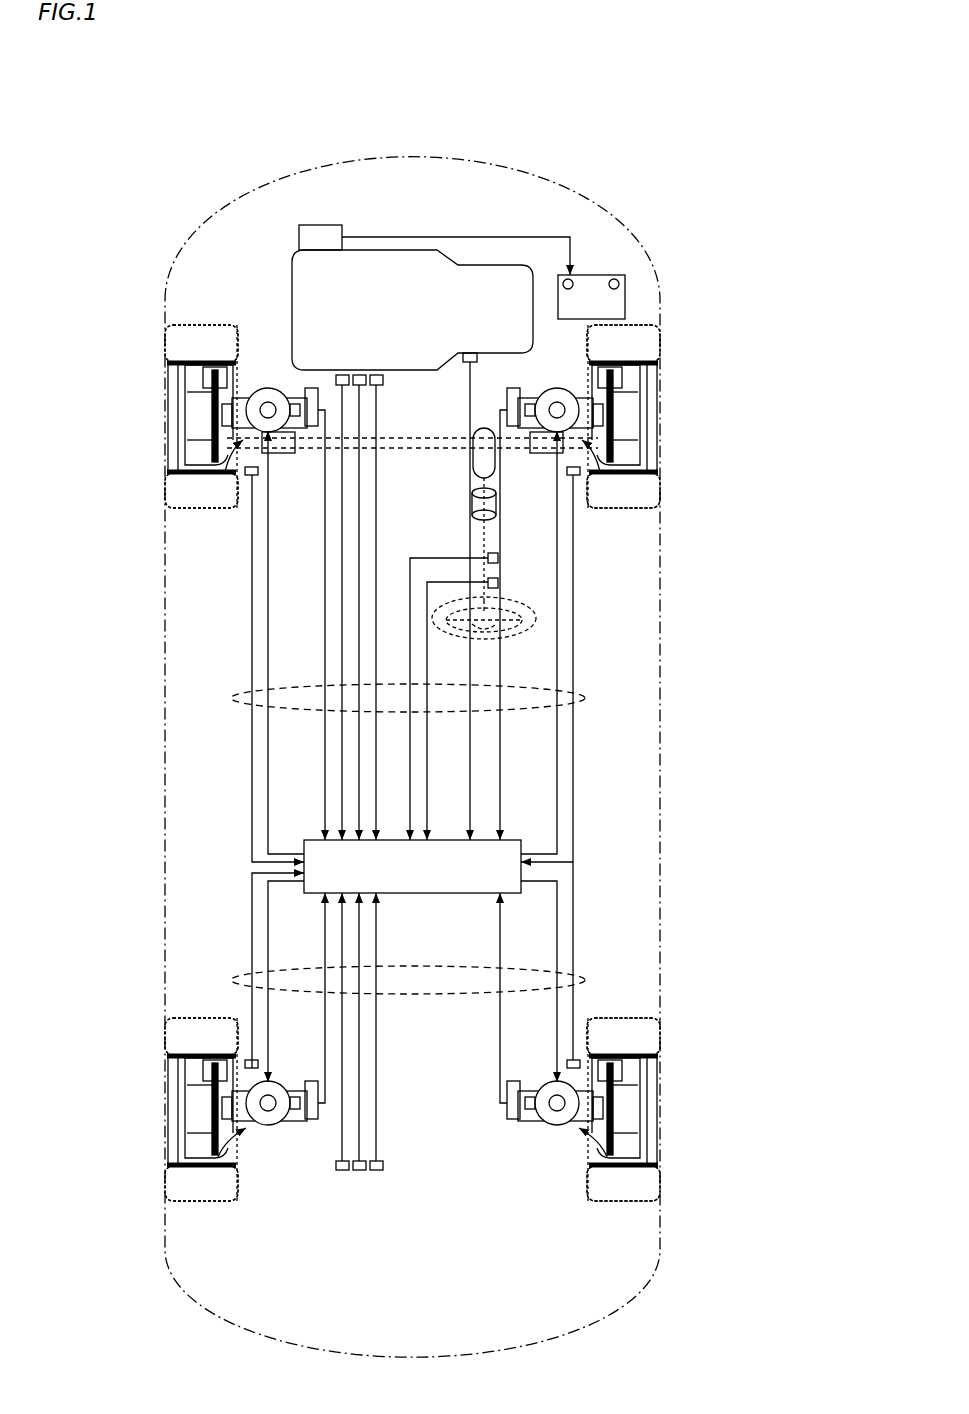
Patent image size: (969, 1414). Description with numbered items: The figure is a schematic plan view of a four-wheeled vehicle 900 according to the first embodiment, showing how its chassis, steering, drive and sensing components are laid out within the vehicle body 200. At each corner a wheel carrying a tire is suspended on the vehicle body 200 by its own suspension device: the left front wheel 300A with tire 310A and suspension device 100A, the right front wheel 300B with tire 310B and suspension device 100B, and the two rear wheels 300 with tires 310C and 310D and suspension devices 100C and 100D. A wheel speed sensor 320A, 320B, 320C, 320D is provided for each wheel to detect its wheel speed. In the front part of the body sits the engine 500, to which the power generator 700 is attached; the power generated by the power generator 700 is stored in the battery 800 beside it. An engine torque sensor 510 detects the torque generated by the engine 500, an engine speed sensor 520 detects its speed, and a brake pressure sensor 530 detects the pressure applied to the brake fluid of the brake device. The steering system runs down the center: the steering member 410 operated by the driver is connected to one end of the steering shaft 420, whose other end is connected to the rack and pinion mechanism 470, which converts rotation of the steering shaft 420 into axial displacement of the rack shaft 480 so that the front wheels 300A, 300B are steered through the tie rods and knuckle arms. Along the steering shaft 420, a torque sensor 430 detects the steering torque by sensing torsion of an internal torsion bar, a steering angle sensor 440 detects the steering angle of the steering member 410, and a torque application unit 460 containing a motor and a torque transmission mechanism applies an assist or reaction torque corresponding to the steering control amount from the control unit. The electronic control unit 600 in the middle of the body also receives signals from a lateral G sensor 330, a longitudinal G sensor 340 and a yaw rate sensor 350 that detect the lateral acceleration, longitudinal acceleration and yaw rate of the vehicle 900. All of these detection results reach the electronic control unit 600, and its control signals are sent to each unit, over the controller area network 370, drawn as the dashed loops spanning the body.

The vehicle 900 is at (630, 110).
The vehicle body 200 is at (643, 247).
The power generator 700 is at (330, 225).
The engine 500 is at (292, 302).
The engine torque sensor 510 is at (348, 375).
The engine speed sensor 520 is at (365, 375).
The brake pressure sensor 530 is at (380, 375).
The battery 800 is at (620, 300).
The wheel 300A is at (165, 372).
The wheel 300B is at (660, 375).
The wheel 300 is at (165, 1065).
The suspension device 100A is at (165, 465).
The suspension device 100B is at (660, 465).
The suspension device 100C is at (165, 1157).
The suspension device 100D is at (660, 1157).
The tire 310A is at (178, 498).
The tire 310B is at (648, 498).
The tire 310C is at (178, 1190).
The tire 310D is at (648, 1190).
The wheel speed sensor 320A is at (232, 478).
The wheel speed sensor 320B is at (592, 478).
The wheel speed sensor 320C is at (243, 1062).
The wheel speed sensor 320D is at (582, 1062).
The rack shaft 480 is at (400, 437).
The rack and pinion mechanism 470 is at (473, 462).
The torque application unit 460 is at (497, 505).
The steering angle sensor 440 is at (498, 558).
The torque sensor 430 is at (498, 583).
The steering shaft 420 is at (500, 594).
The steering member 410 is at (535, 625).
The controller area network 370 is at (588, 975).
The electronic control unit 600 is at (405, 895).
The yaw rate sensor 350 is at (380, 1170).
The longitudinal G sensor 340 is at (361, 1170).
The lateral G sensor 330 is at (344, 1170).